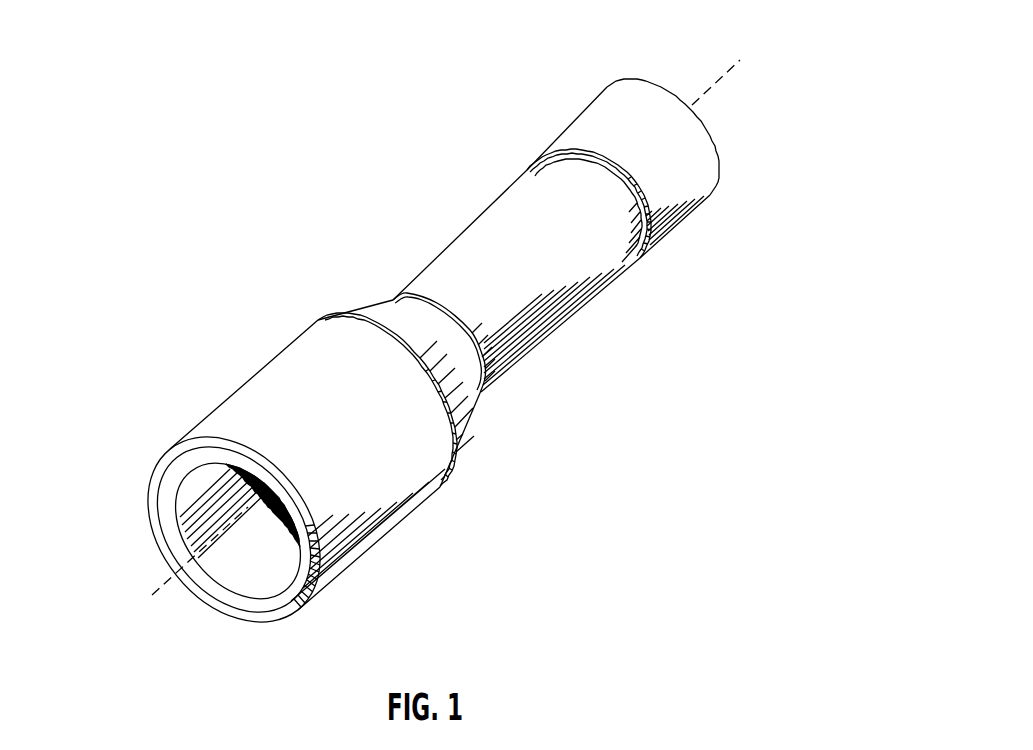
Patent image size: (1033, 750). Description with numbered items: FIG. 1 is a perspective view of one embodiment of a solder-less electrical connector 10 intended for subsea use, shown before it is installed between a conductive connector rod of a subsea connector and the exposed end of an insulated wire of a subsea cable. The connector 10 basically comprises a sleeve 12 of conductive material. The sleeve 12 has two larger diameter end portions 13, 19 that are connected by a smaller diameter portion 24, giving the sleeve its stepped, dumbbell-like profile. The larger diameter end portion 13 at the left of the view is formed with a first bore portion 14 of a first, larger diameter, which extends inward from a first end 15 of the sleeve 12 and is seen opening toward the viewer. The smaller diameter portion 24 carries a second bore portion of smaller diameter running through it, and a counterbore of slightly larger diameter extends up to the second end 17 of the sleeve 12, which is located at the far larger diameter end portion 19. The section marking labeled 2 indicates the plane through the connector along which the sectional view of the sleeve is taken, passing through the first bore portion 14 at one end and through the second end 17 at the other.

The solder-less electrical connector 10 is at (150, 200).
The sleeve 12 is at (488, 410).
The larger diameter end portion 13 is at (386, 523).
The first bore portion 14 is at (247, 570).
The first end 15 is at (270, 608).
The second end 17 is at (720, 157).
The larger diameter end portion 19 is at (673, 218).
The smaller diameter portion 24 is at (490, 230).
The section line 2- 2 is at (110, 573).